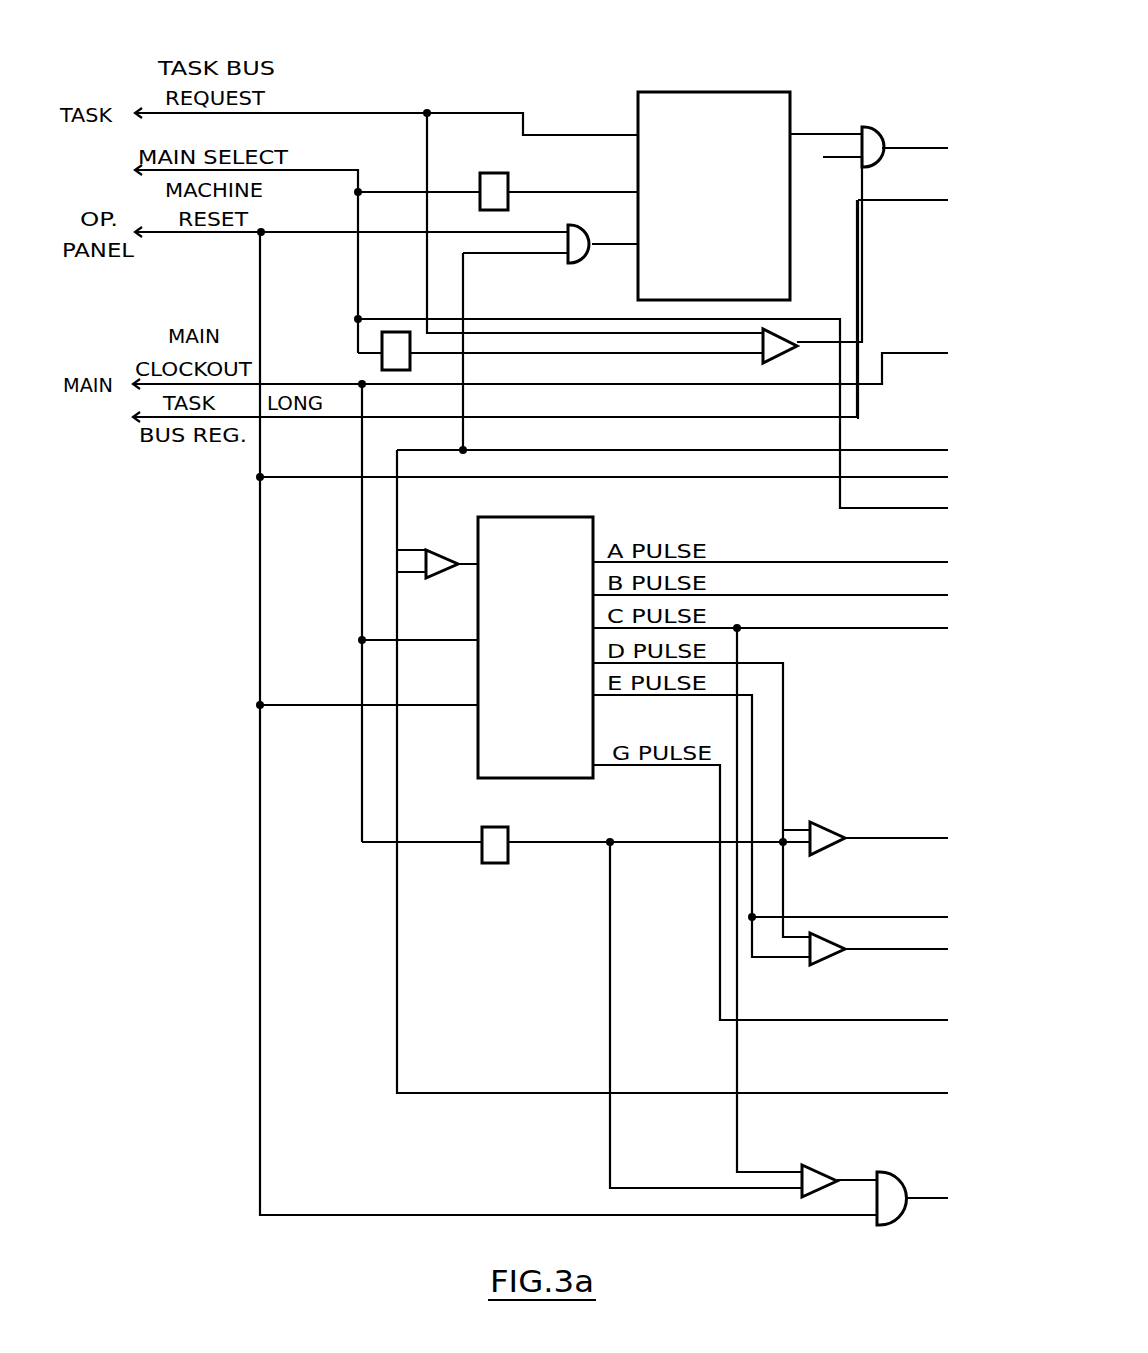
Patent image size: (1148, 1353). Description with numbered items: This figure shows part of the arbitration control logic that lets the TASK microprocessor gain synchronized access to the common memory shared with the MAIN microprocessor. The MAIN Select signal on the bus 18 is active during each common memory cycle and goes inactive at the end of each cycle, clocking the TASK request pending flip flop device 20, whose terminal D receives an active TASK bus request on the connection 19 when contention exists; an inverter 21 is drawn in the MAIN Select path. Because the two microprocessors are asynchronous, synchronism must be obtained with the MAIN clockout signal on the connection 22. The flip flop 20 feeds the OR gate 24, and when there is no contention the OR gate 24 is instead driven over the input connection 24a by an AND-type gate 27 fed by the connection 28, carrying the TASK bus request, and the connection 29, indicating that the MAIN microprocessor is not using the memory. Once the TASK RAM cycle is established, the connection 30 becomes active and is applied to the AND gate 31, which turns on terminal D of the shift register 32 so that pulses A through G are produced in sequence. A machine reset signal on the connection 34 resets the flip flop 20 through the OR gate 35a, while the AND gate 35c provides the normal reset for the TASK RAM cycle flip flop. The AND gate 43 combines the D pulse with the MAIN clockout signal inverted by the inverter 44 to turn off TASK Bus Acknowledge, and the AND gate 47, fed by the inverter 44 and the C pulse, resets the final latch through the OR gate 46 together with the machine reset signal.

The bus 18 is at (308, 168).
The connection 19 is at (470, 112).
The flip flop device 20 is at (790, 108).
The inverter 21 is at (500, 173).
The connection 22 is at (295, 383).
The OR gate 24 is at (878, 128).
The input connection 24a is at (837, 157).
The gate 27 is at (790, 350).
The connection 28 is at (540, 322).
The connection 29 is at (527, 354).
The connection 30 is at (548, 449).
The AND gate 31 is at (438, 550).
The shift register 32 is at (530, 517).
The connection 34 is at (349, 231).
The OR gate 35a is at (578, 226).
The AND gate 35c is at (836, 956).
The AND gate 43 is at (825, 822).
The inverter 44 is at (498, 827).
The OR gate 46 is at (892, 1222).
The AND gate 47 is at (815, 1165).